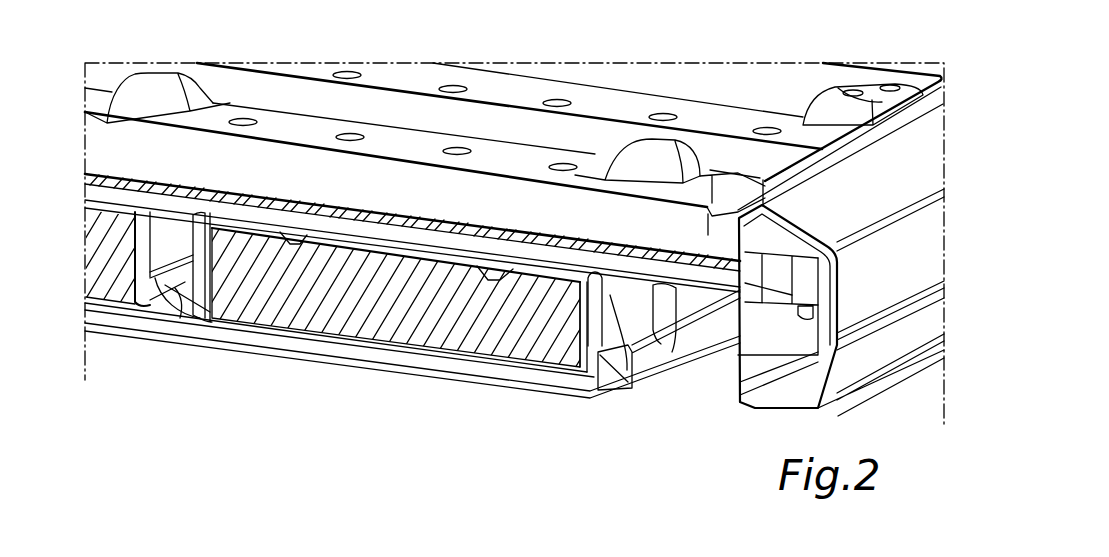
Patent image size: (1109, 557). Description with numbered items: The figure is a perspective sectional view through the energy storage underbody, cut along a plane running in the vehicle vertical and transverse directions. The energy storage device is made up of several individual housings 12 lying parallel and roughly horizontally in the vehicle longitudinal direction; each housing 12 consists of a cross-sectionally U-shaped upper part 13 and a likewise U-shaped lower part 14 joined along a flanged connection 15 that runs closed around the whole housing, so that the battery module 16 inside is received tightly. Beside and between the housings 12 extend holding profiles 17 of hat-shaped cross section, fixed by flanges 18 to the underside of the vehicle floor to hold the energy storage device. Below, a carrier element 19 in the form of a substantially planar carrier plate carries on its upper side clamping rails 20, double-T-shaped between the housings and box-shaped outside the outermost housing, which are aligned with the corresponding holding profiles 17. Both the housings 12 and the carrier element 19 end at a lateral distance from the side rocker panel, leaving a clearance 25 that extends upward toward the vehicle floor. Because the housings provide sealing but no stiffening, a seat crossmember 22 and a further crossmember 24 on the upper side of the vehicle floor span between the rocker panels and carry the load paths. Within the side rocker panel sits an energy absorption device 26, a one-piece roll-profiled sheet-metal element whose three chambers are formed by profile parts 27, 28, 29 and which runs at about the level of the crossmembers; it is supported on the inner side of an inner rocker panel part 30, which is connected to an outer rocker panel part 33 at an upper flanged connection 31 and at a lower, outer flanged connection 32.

The housing 12 is at (118, 287).
The upper part 13 is at (278, 332).
The lower part 14 is at (433, 352).
The flanged connection 15 is at (163, 295).
The battery module 16 is at (455, 322).
The holding profile 17 is at (136, 318).
The flange 18 is at (543, 340).
The carrier element 19 is at (302, 362).
The clamping rail 20 is at (193, 327).
The seat crossmember 22 is at (543, 213).
The crossmember 24 is at (727, 160).
The clearance 25 is at (723, 362).
The energy absorption device 26 is at (837, 293).
The profile part 27 is at (756, 193).
The profile part 28 is at (777, 278).
The profile part 29 is at (835, 282).
The inner rocker panel part 30 is at (754, 408).
The upper flanged connection 31 is at (787, 180).
The lower, outer flanged connection 32 is at (847, 408).
The outer rocker panel part 33 is at (855, 320).